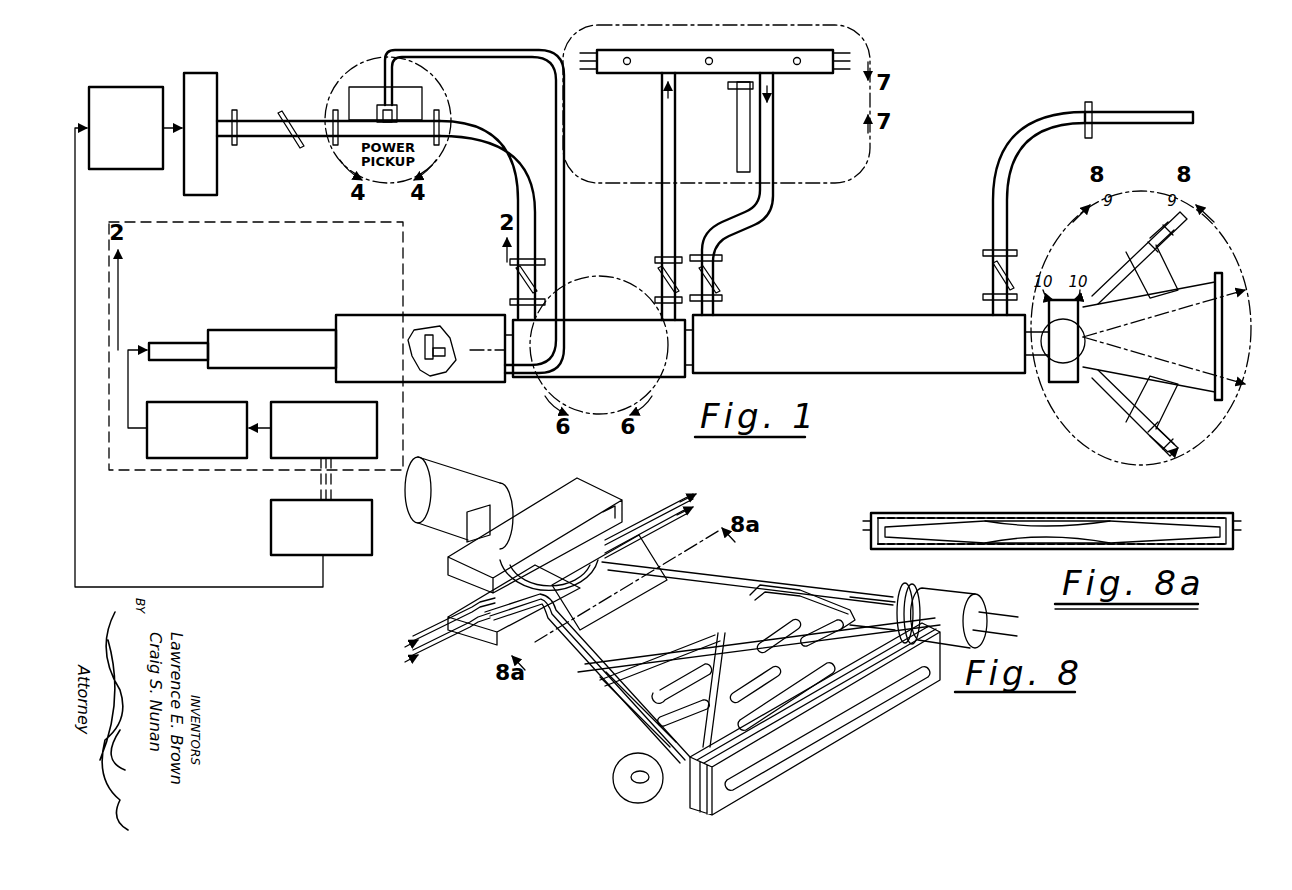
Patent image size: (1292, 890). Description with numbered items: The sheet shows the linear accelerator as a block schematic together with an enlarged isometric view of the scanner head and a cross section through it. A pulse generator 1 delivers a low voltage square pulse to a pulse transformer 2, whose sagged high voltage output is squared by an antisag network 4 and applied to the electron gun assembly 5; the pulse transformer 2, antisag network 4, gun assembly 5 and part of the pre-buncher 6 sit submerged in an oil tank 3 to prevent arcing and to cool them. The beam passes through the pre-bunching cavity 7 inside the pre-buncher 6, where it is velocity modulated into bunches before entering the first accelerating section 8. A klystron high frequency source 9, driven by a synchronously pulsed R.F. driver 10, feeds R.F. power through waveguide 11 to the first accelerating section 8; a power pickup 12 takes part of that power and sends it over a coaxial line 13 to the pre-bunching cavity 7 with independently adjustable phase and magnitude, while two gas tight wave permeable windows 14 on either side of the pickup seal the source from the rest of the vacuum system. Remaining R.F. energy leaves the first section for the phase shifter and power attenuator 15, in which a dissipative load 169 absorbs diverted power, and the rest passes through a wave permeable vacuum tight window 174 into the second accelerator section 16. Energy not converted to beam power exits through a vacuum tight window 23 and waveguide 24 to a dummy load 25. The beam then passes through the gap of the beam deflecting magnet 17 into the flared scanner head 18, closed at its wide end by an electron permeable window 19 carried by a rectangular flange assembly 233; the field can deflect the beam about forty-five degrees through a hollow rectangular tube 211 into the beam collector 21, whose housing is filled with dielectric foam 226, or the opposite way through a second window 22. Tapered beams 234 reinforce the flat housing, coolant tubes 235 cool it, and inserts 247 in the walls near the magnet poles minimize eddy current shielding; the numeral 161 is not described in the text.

In FIG. 1, the pulse generator 1 is at (343, 555).
In FIG. 1, the pulse transformer 2 is at (308, 402).
In FIG. 1, the oil tank 3 is at (406, 414).
In FIG. 1, the antisag network 4 is at (210, 402).
In FIG. 1, the electron gun assembly 5 is at (290, 330).
In FIG. 1, the pre-buncher 6 is at (417, 315).
In FIG. 1, the pre-bunching cavity 7 is at (440, 380).
In FIG. 1, the first accelerating section 8 is at (612, 386).
In FIG. 1, the high frequency source 9 is at (215, 73).
In FIG. 1, the R.F. driver 10 is at (130, 87).
In FIG. 1, the waveguide 11 is at (256, 140).
In FIG. 1, the power pickup 12 is at (358, 90).
In FIG. 1, the coaxial line 13 is at (566, 216).
In FIG. 1, the gas tight wave permeable windows 14 is at (288, 112).
In FIG. 1, the phase shifter and power attenuator 15 is at (650, 103).
In FIG. 1, the second accelerator section 16 is at (893, 373).
In FIG. 1, the beam deflecting magnet 17 is at (1062, 372).
In FIG. 8, the beam deflecting magnet 17 is at (523, 544).
In FIG. 1, the scanner head 18 is at (1106, 345).
In FIG. 8, the scanner head 18 is at (654, 633).
In FIG. 8A, the scanner head 18 is at (1043, 510).
In FIG. 1, the electron permeable window 19 is at (1222, 335).
In FIG. 8, the electron permeable window 19 is at (845, 715).
In FIG. 1, the beam collector 21 is at (1182, 228).
In FIG. 8, the beam collector 21 is at (957, 594).
In FIG. 1, the second electron permeable gas tight window 22 is at (1180, 430).
In FIG. 8, the second electron permeable gas tight window 22 is at (625, 787).
In FIG. 1, the vacuum tight window 23 is at (993, 278).
In FIG. 1, the waveguide 24 is at (1010, 148).
In FIG. 1, the dummy load 25 is at (1135, 112).
In FIG. 1, the directional coupler 161 is at (658, 278).
In FIG. 1, the dissipative load 169 is at (737, 125).
In FIG. 1, the wave permeable vacuum tight window 174 is at (722, 284).
In FIG. 8, the hollow rectangular tube 211 is at (895, 602).
In FIG. 8, the dielectric foam 226 is at (985, 610).
In FIG. 8, the rectangular flange assembly 233 is at (930, 685).
In FIG. 8, the tapered beams 234 is at (648, 672).
In FIG. 8, the fluid carrying coolant tubes 235 is at (465, 645).
In FIG. 8, the inserts 247 is at (583, 605).